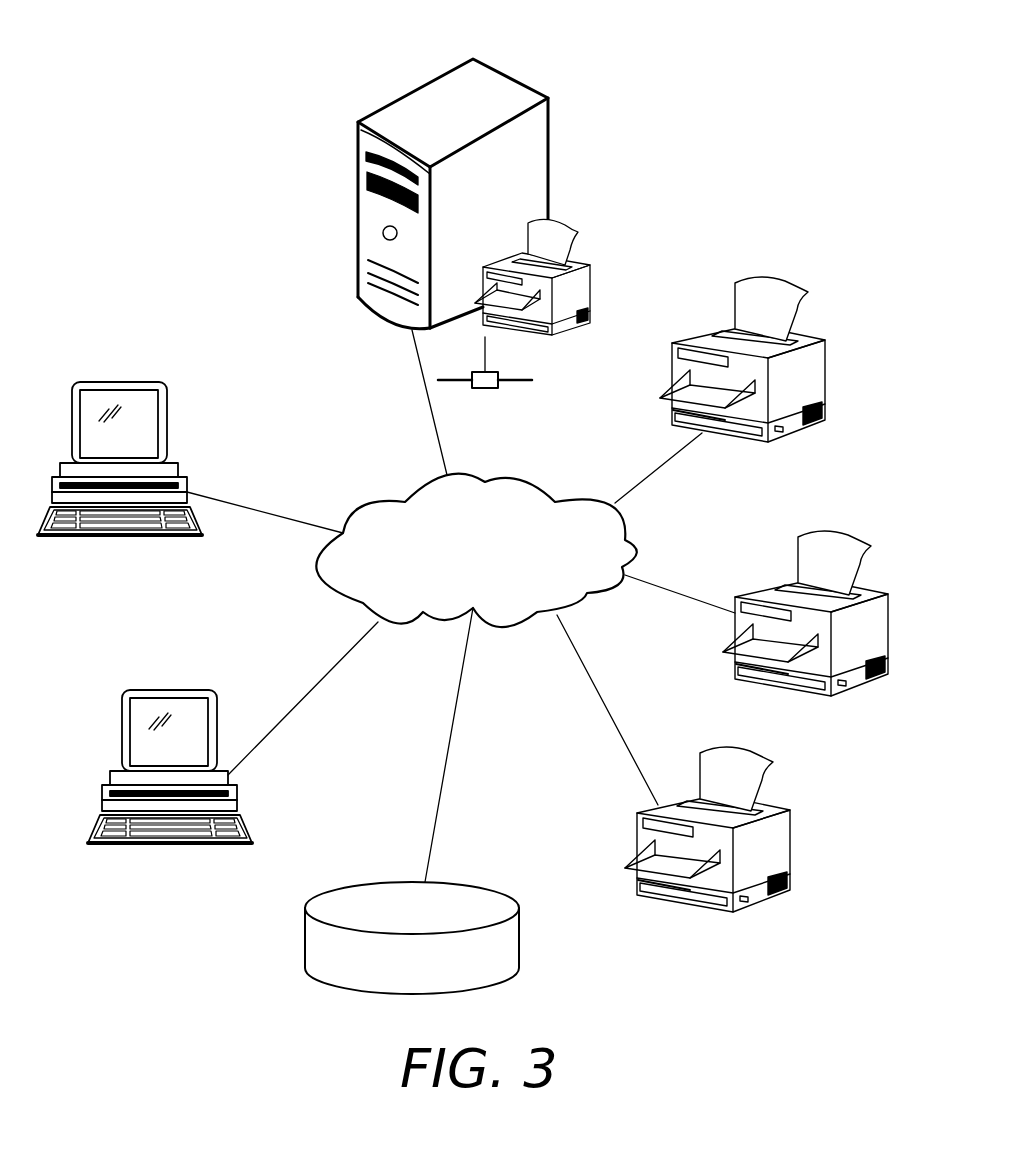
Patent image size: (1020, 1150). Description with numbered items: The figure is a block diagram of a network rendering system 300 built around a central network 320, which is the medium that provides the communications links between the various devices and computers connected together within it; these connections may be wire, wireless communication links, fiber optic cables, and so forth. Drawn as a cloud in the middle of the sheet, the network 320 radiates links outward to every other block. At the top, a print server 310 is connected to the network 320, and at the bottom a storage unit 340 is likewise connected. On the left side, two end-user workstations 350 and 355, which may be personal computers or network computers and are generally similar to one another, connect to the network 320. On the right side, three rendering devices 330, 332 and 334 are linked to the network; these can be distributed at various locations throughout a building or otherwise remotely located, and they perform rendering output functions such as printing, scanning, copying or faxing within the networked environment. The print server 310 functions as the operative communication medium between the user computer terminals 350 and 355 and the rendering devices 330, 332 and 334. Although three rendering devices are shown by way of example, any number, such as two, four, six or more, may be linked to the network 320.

The network rendering system 300 is at (678, 75).
The print server 310 is at (548, 158).
The network 320 is at (372, 502).
The rendering device 330 is at (797, 433).
The rendering device 332 is at (857, 690).
The rendering device 334 is at (790, 840).
The storage unit 340 is at (380, 882).
The end-user workstation 350 is at (177, 392).
The end-user workstation 355 is at (158, 690).